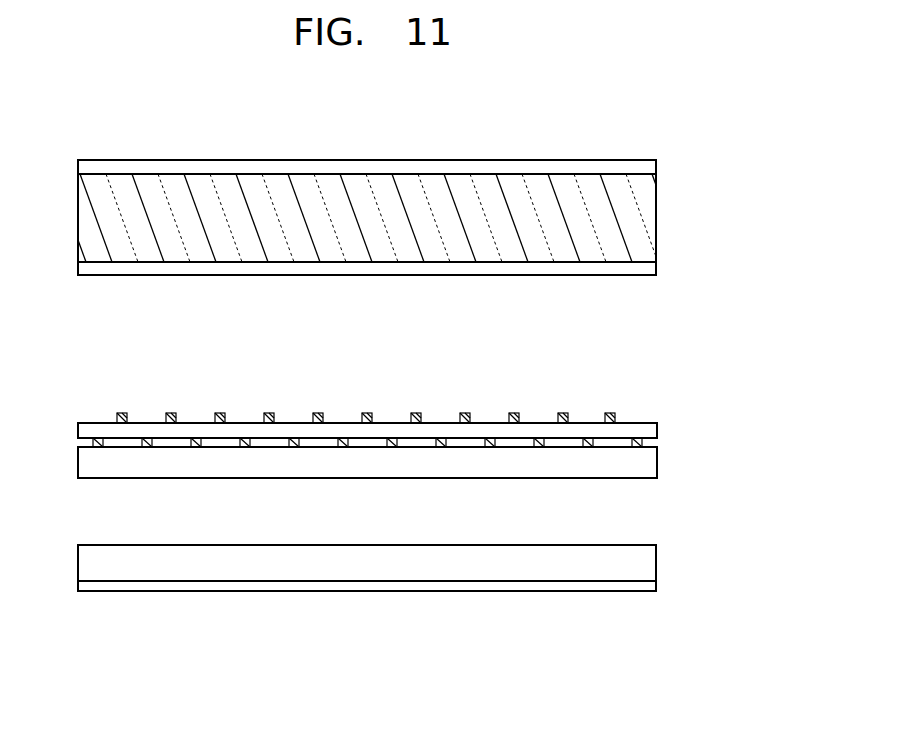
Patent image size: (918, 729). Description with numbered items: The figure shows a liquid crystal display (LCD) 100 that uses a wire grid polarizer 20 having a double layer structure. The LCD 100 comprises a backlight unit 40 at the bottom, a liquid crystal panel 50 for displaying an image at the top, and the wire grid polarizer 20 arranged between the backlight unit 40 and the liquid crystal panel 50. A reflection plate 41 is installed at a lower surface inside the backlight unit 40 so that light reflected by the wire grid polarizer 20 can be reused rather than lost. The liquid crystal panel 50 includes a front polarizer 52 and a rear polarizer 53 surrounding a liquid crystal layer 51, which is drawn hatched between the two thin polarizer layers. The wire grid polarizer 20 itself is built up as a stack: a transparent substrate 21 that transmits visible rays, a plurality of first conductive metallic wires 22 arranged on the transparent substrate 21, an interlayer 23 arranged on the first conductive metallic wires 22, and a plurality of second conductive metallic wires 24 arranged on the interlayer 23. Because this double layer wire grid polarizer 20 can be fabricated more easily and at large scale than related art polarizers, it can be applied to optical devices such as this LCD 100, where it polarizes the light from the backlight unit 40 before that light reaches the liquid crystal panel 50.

The liquid crystal display 100 is at (402, 403).
The liquid crystal panel 50 is at (412, 220).
The liquid crystal layer 51 is at (656, 218).
The front polarizer 52 is at (656, 168).
The rear polarizer 53 is at (399, 269).
The wire grid polarizer 20 is at (377, 428).
The transparent substrate 21 is at (657, 467).
The first conductive metallic wires 22 is at (644, 442).
The interlayer 23 is at (399, 425).
The second conductive metallic wires 24 is at (610, 412).
The backlight unit 40 is at (656, 560).
The reflection plate 41 is at (656, 585).